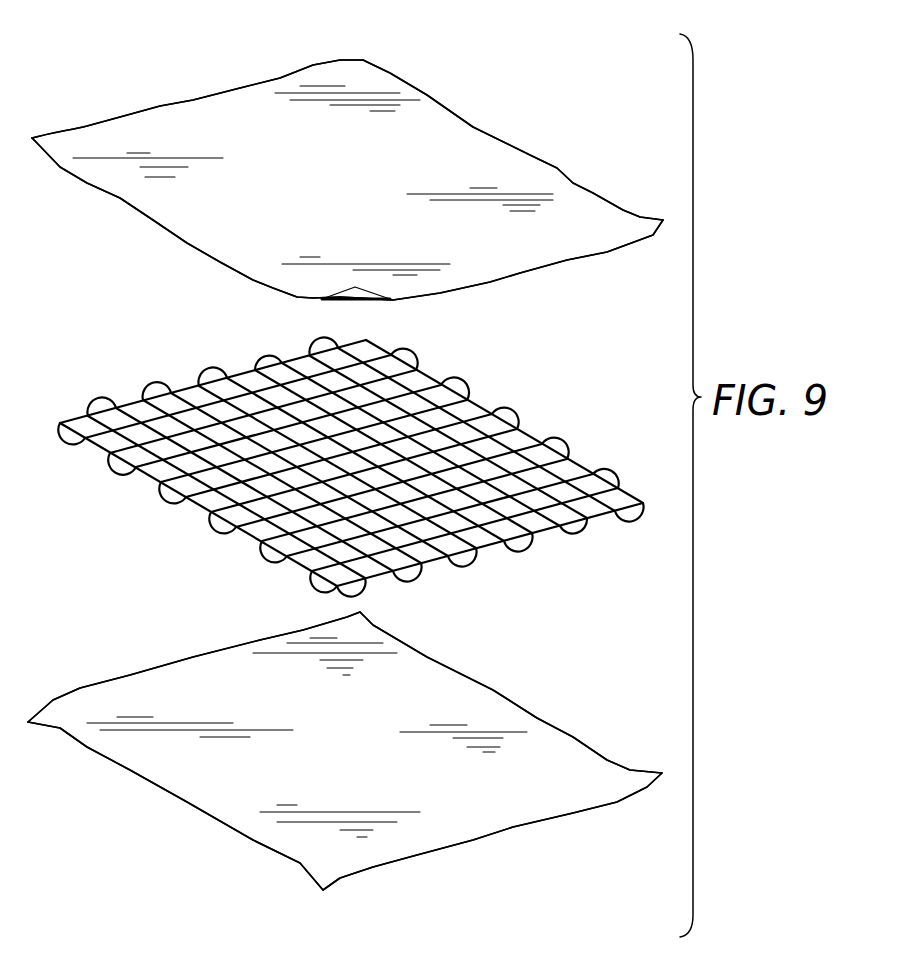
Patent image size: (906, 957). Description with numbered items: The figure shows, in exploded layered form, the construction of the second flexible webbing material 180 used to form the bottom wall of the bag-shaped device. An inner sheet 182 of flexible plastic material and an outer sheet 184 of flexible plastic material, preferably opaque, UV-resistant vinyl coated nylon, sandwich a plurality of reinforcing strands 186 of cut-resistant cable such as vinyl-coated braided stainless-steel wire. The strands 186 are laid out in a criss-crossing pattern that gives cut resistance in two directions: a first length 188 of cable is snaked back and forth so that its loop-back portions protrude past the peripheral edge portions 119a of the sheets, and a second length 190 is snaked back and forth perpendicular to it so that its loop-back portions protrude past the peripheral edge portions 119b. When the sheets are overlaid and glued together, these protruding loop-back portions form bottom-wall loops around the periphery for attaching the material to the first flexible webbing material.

The second flexible webbing material 180 is at (347, 180).
The inner sheet 182 is at (355, 204).
The outer sheet 184 is at (365, 762).
The reinforcing strands 186 is at (348, 466).
The first length 188 is at (493, 545).
The second length 190 is at (147, 475).
The peripheral edge portions 119a is at (527, 157).
The peripheral edge portions 119b is at (192, 99).